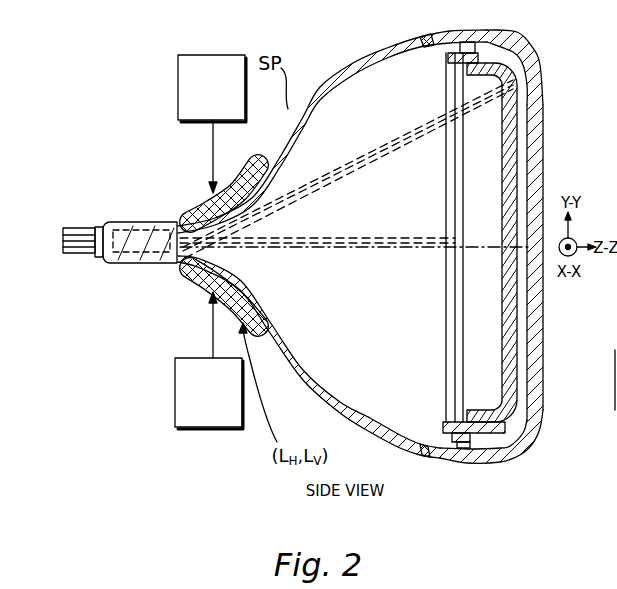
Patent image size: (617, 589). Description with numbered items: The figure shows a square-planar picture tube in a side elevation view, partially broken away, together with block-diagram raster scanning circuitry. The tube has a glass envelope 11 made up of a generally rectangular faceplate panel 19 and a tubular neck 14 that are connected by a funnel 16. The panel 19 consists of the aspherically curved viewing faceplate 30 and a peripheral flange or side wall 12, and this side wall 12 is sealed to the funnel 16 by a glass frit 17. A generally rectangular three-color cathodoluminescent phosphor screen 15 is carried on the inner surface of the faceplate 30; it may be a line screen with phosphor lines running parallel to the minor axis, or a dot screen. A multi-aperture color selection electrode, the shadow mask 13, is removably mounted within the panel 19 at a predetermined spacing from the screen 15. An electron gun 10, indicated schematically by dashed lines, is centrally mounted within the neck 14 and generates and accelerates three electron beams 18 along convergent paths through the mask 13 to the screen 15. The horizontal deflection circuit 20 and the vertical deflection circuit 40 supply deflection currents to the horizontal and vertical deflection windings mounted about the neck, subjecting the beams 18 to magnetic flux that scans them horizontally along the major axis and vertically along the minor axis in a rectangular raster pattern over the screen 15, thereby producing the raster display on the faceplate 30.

The electron gun 10 is at (143, 263).
The glass envelope 11 is at (318, 405).
The side wall 12 is at (481, 463).
The shadow mask 13 is at (502, 185).
The tubular neck 14 is at (155, 221).
The phosphor screen 15 is at (514, 346).
The funnel 16 is at (332, 80).
The glass frit 17 is at (425, 458).
The electron beams 18 is at (367, 240).
The faceplate panel 19 is at (537, 58).
The horizontal deflection circuit 20 is at (203, 122).
The faceplate 30 is at (545, 113).
The vertical deflection circuit 40 is at (213, 427).